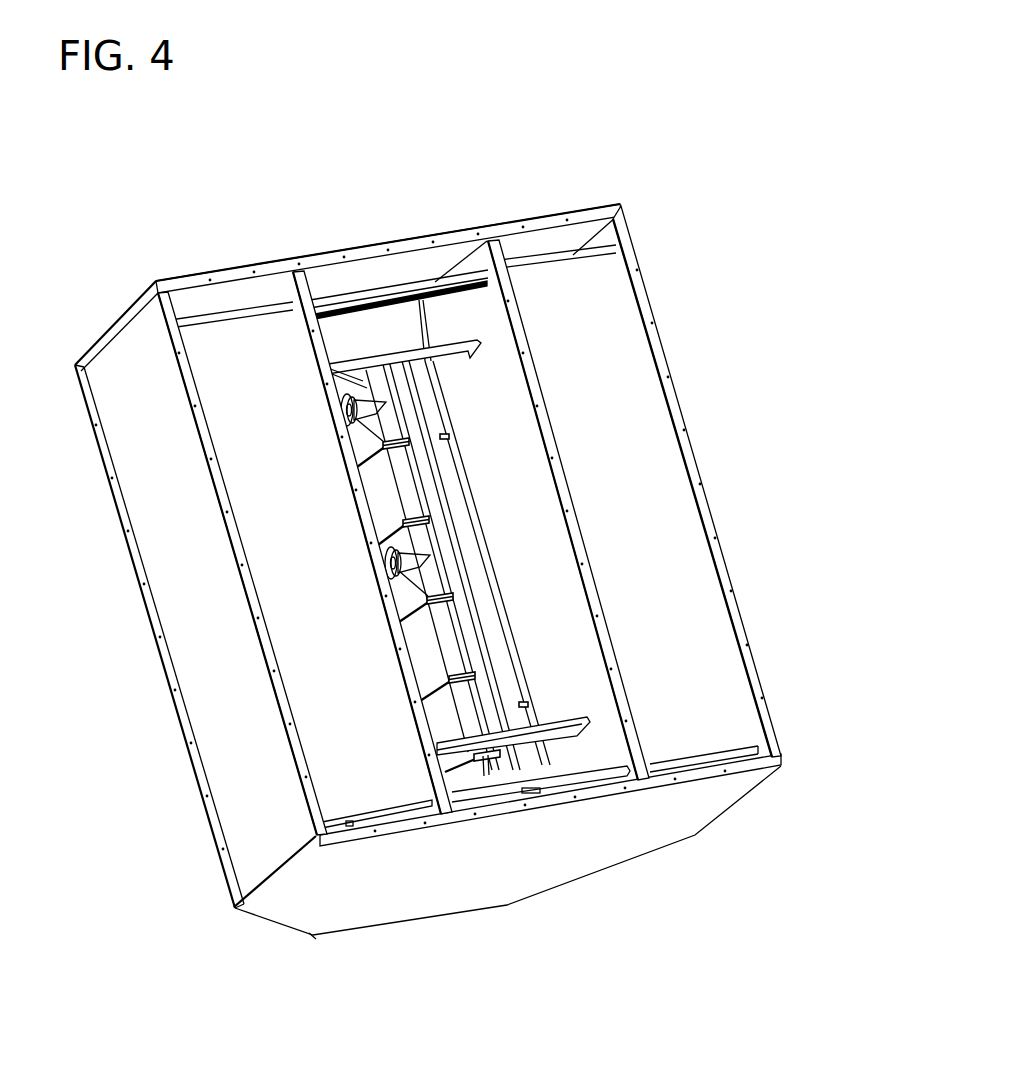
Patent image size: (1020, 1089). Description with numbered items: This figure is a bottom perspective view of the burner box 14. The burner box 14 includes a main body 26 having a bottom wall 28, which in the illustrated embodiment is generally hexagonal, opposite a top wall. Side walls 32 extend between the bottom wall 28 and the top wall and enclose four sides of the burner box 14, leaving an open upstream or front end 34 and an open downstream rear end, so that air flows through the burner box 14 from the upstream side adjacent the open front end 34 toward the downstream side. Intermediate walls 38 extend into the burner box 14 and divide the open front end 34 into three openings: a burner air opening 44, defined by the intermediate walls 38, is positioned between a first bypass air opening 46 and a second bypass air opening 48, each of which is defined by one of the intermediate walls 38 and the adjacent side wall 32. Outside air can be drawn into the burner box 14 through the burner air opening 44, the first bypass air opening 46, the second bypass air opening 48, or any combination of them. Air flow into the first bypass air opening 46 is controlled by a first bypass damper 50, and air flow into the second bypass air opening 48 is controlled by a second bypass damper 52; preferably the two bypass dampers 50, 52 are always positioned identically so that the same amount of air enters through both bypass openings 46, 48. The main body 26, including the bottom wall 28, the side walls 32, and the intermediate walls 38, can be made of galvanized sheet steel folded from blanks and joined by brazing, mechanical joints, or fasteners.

The burner box 14 is at (735, 180).
The main body 26 is at (731, 804).
The bottom wall 28 is at (449, 881).
The side walls 32 is at (219, 630).
The open front end 34 is at (641, 790).
The intermediate walls 38 is at (298, 286).
The burner air opening 44 is at (490, 331).
The first bypass air opening 46 is at (649, 367).
The second bypass air opening 48 is at (276, 680).
The first bypass damper 50 is at (640, 485).
The second bypass damper 52 is at (292, 543).